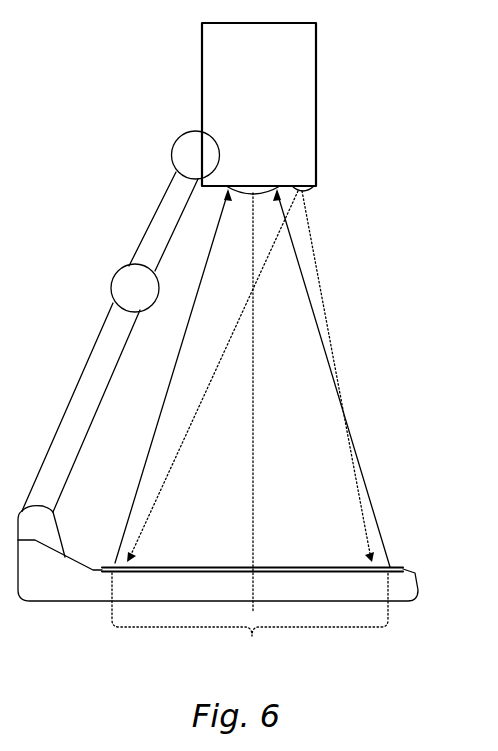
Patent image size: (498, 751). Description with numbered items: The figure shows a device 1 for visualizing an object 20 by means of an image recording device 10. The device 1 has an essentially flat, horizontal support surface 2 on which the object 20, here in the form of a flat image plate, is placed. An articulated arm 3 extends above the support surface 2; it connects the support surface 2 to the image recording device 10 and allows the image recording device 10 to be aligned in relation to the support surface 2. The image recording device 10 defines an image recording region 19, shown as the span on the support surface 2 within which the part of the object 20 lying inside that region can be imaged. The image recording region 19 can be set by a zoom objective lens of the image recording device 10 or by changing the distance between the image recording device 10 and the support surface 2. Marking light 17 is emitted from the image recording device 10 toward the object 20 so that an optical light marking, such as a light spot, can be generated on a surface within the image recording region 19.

The device 1 is at (126, 46).
The support surface 2 is at (407, 576).
The articulated arm 3 is at (98, 353).
The image recording device 10 is at (267, 100).
The marking light 17 is at (317, 260).
The image recording region 19 is at (250, 619).
The object 20 is at (280, 565).